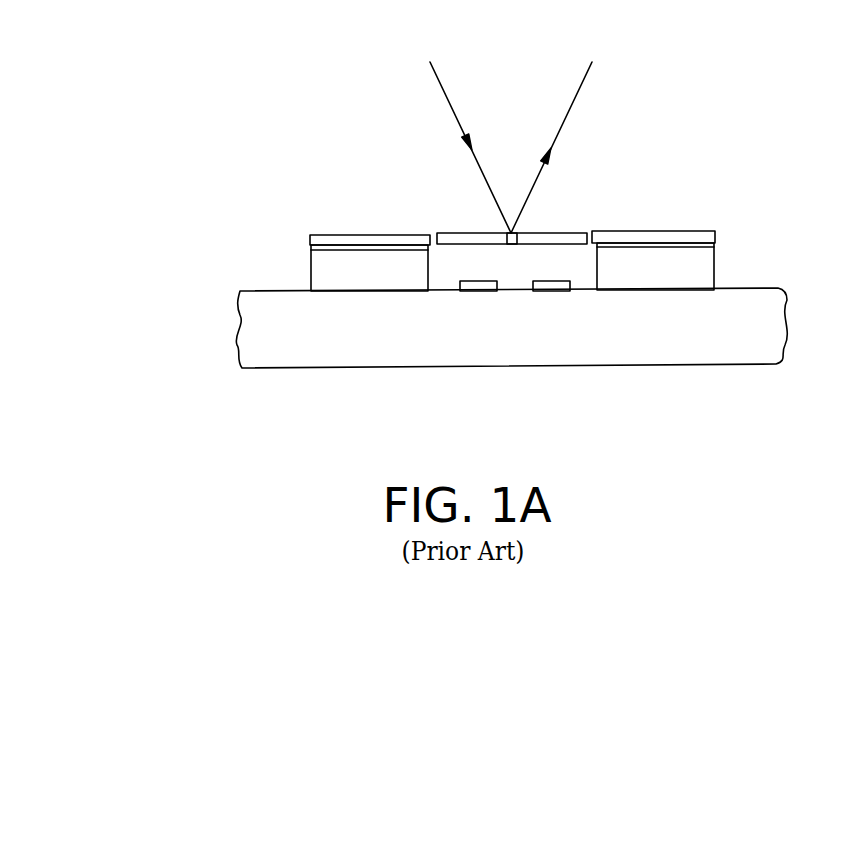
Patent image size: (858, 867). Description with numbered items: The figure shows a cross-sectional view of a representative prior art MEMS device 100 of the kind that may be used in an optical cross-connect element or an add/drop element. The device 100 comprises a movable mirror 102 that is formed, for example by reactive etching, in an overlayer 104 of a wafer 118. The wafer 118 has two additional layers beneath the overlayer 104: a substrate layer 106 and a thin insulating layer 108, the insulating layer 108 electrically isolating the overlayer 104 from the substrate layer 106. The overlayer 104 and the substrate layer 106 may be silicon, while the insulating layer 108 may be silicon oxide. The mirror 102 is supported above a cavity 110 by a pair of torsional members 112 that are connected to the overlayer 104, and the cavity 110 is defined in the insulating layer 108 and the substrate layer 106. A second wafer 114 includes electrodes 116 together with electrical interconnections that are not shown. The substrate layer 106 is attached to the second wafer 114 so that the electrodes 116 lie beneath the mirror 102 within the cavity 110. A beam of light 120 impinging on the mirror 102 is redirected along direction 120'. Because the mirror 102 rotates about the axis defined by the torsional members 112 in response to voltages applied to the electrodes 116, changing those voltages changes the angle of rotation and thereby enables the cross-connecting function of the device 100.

The MEMS device 100 is at (328, 433).
The movable mirror 102 is at (526, 173).
The overlayer 104 is at (340, 235).
The substrate layer 106 is at (705, 265).
The thin insulating layer 108 is at (715, 242).
The cavity 110 is at (567, 258).
The torsional members 112 is at (512, 232).
The second wafer 114 is at (685, 348).
The electrodes 116 is at (483, 287).
The wafer 118 is at (297, 239).
The beam of light 120 is at (456, 133).
The direction 120' is at (565, 133).